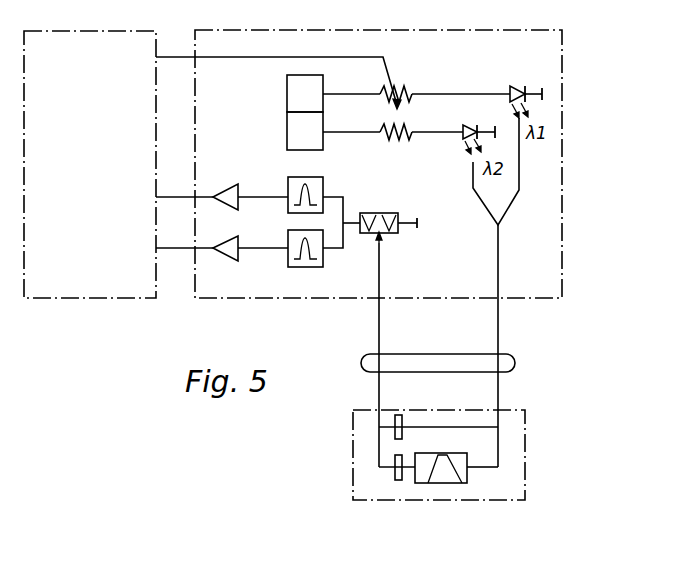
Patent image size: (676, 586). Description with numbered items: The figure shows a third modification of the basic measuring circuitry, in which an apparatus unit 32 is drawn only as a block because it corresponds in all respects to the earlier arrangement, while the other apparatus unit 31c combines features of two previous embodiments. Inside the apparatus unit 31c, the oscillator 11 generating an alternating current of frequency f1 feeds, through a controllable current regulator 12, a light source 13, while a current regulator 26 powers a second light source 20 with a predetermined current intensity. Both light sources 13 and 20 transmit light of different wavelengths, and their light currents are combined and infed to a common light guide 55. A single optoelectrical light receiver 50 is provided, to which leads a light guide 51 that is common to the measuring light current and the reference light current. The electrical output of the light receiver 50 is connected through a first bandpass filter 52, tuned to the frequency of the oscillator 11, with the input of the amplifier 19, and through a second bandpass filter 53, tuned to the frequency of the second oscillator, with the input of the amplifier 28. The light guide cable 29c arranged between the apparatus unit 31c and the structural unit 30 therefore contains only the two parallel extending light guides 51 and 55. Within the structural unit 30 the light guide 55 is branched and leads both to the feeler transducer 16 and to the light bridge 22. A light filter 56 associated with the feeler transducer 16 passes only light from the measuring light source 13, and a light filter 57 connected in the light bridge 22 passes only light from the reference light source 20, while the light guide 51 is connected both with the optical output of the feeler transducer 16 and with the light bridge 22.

The oscillator 11 is at (286, 94).
The controllable current regulator 12 is at (402, 88).
The light source 13 is at (516, 86).
The feeler transducer 16 is at (470, 479).
The amplifier 19 is at (226, 262).
The second light source 20 is at (465, 140).
The light bridge 22 is at (436, 427).
The current regulator 26 is at (394, 141).
The amplifier 28 is at (225, 185).
The light guide cable 29c is at (518, 364).
The structural unit 30 is at (528, 457).
The apparatus unit 31c is at (565, 187).
The apparatus unit 32 is at (57, 300).
The optoelectrical light receiver 50 is at (392, 214).
The light guide 51 is at (382, 334).
The first bandpass filter 52 is at (311, 268).
The second bandpass filter 53 is at (300, 177).
The common light guide 55 is at (502, 334).
The light filter 56 is at (396, 471).
The light filter 57 is at (395, 421).